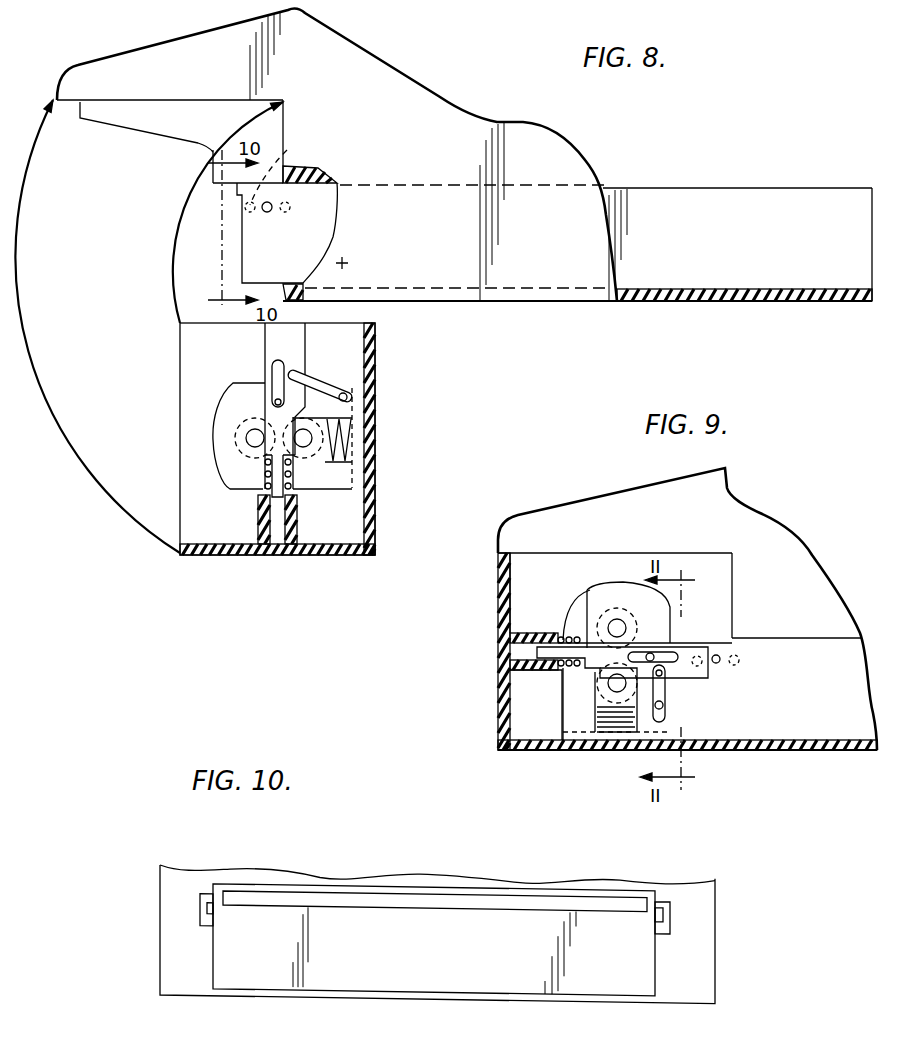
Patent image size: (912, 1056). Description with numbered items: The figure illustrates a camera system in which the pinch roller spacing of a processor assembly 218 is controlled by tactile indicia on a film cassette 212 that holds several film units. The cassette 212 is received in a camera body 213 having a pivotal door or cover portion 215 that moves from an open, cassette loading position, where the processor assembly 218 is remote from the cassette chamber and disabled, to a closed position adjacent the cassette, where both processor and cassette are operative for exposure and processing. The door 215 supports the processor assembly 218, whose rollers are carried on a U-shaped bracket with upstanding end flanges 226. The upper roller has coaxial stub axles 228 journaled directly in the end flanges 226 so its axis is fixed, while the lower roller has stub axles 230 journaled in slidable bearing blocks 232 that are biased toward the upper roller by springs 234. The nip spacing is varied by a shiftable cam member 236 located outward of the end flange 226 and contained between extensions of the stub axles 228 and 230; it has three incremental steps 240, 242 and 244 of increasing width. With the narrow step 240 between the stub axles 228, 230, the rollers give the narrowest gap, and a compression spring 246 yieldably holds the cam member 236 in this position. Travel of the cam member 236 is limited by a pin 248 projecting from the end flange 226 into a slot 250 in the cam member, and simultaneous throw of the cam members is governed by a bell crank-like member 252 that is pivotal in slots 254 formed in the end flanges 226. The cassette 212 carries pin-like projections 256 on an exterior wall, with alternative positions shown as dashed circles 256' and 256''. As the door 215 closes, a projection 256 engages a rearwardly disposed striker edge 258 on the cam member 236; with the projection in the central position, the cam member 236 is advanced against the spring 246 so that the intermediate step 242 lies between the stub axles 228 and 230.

In FIG. 8, the cassette 212 is at (745, 251).
In FIG. 9, the cassette 212 is at (839, 720).
In FIG. 10, the cassette 212 is at (450, 958).
In FIG. 8, the camera body 213 is at (450, 149).
In FIG. 9, the camera body 213 is at (700, 512).
In FIG. 10, the camera body 213 is at (698, 966).
In FIG. 8, the door or cover portion 215 is at (380, 348).
In FIG. 9, the door or cover portion 215 is at (497, 696).
In FIG. 8, the processor assembly 218 is at (203, 432).
In FIG. 9, the processor assembly 218 is at (523, 615).
In FIG. 8, the end flanges 226 is at (237, 473).
In FIG. 9, the end flanges 226 is at (587, 598).
In FIG. 8, the stub axles 228 is at (248, 440).
In FIG. 9, the stub axles 228 is at (615, 620).
In FIG. 8, the stub axles 230 is at (310, 446).
In FIG. 9, the stub axles 230 is at (607, 688).
In FIG. 8, the bearing blocks 232 is at (323, 423).
In FIG. 9, the bearing blocks 232 is at (597, 705).
In FIG. 8, the springs 234 is at (353, 440).
In FIG. 9, the springs 234 is at (612, 722).
In FIG. 8, the cam member 236 is at (292, 344).
In FIG. 9, the cam member 236 is at (592, 600).
In FIG. 9, the step 240 is at (585, 664).
In FIG. 9, the step 242 is at (593, 680).
In FIG. 9, the step 244 is at (663, 684).
In FIG. 8, the compression spring 246 is at (295, 486).
In FIG. 9, the compression spring 246 is at (572, 640).
In FIG. 8, the pin 248 is at (267, 382).
In FIG. 8, the slot 250 is at (278, 362).
In FIG. 8, the bell crank-like member 252 is at (309, 376).
In FIG. 9, the bell crank-like member 252 is at (665, 705).
In FIG. 8, the slots 254 is at (346, 398).
In FIG. 8, the pin-like projections 256 is at (289, 224).
In FIG. 9, the pin-like projections 256 is at (666, 646).
In FIG. 10, the pin-like projections 256 is at (479, 886).
In FIG. 8, the alternative position of projection 256' is at (297, 171).
In FIG. 9, the alternative position of projection 256' is at (725, 674).
In FIG. 8, the alternative position of projection 256'' is at (339, 206).
In FIG. 9, the alternative position of projection 256'' is at (774, 661).
In FIG. 8, the striker edge 258 is at (289, 305).
In FIG. 9, the striker edge 258 is at (716, 655).